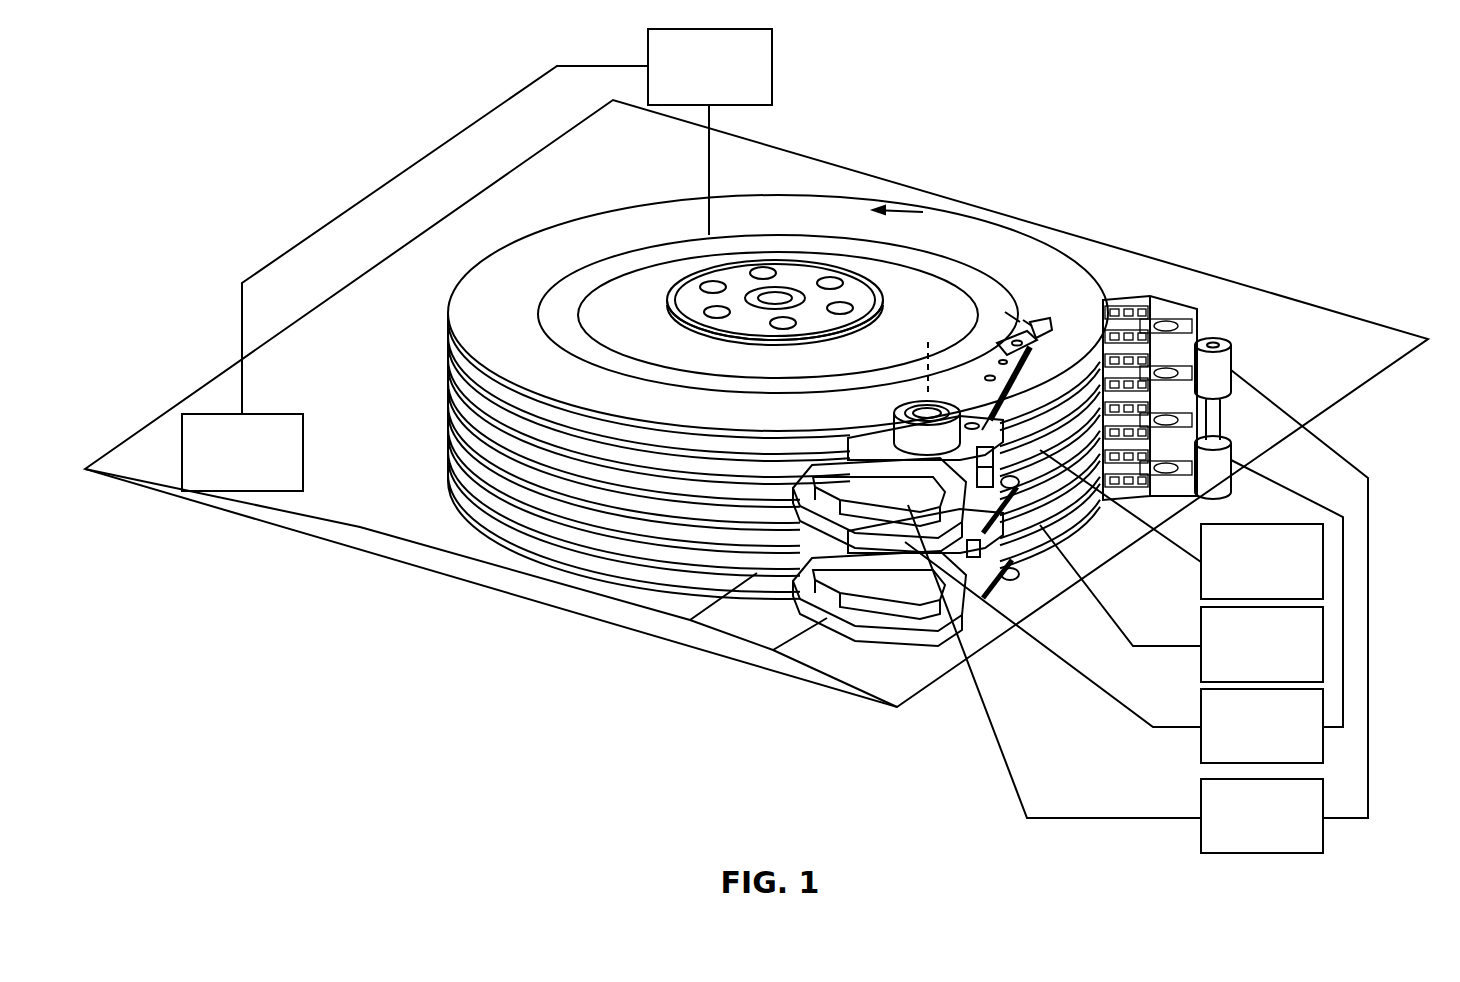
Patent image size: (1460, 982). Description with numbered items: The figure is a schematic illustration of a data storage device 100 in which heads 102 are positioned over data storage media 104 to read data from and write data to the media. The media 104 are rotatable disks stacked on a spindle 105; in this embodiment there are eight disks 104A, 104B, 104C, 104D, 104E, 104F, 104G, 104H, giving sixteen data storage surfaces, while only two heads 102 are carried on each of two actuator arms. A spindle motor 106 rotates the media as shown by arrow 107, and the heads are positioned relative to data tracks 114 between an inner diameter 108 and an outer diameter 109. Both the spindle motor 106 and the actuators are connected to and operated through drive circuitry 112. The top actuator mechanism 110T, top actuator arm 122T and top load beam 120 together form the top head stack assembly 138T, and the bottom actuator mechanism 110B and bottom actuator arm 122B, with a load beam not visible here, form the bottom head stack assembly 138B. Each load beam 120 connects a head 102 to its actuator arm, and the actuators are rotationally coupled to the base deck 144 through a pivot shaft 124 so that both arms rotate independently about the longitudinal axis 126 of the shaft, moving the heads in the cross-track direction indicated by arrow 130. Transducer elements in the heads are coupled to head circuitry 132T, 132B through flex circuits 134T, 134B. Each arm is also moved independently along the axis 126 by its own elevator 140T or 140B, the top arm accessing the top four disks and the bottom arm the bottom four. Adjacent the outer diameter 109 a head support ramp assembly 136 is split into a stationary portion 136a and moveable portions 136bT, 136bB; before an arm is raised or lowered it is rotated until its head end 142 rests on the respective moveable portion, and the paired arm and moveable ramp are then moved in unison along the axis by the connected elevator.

The data storage device 100 is at (1224, 158).
The heads 102 is at (1047, 327).
The data storage media 104 is at (748, 214).
The disk 104A is at (450, 341).
The disk 104B is at (450, 364).
The disk 104C is at (450, 387).
The disk 104D is at (450, 407).
The disk 104E is at (450, 430).
The disk 104F is at (450, 454).
The disk 104G is at (450, 477).
The disk 104H is at (450, 502).
The spindle 105 is at (922, 212).
The spindle motor 106 is at (775, 66).
The arrow 107 is at (960, 213).
The inner diameter 108 is at (776, 296).
The outer diameter 109 is at (975, 205).
The top actuator mechanism 110T is at (868, 517).
The bottom actuator mechanism 110B is at (922, 618).
The drive circuitry 112 is at (198, 413).
The data tracks 114 is at (1007, 310).
The load beam 120 is at (1000, 303).
The top actuator arm 122T is at (1047, 325).
The bottom actuator arm 122B is at (1050, 545).
The pivot shaft 124 is at (912, 400).
The longitudinal axis 126 is at (920, 368).
The arrow 130 is at (1096, 300).
The head circuitry 132T is at (1323, 562).
The head circuitry 132B is at (1201, 660).
The flex circuit 134T is at (1072, 500).
The flex circuit 134B is at (1105, 533).
The head support ramp assembly 136 is at (1207, 305).
The stationary portion 136a is at (1138, 302).
The moveable ramp 136bT is at (1200, 335).
The moveable ramp 136bB is at (1240, 387).
The top head stack assembly 138T is at (812, 512).
The bottom head stack assembly 138B is at (886, 637).
The elevator 140T is at (1201, 822).
The elevator 140B is at (1201, 745).
The head end 142 is at (1024, 318).
The base deck 144 is at (302, 518).